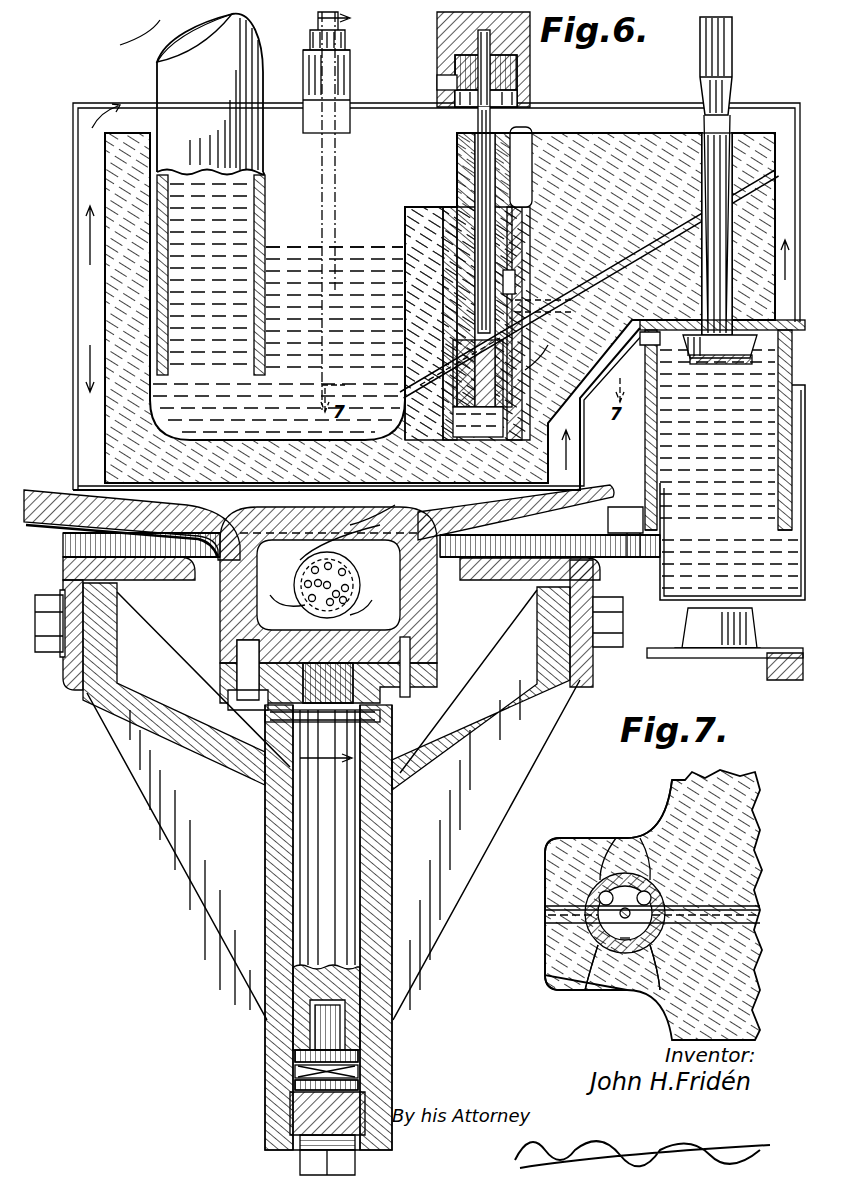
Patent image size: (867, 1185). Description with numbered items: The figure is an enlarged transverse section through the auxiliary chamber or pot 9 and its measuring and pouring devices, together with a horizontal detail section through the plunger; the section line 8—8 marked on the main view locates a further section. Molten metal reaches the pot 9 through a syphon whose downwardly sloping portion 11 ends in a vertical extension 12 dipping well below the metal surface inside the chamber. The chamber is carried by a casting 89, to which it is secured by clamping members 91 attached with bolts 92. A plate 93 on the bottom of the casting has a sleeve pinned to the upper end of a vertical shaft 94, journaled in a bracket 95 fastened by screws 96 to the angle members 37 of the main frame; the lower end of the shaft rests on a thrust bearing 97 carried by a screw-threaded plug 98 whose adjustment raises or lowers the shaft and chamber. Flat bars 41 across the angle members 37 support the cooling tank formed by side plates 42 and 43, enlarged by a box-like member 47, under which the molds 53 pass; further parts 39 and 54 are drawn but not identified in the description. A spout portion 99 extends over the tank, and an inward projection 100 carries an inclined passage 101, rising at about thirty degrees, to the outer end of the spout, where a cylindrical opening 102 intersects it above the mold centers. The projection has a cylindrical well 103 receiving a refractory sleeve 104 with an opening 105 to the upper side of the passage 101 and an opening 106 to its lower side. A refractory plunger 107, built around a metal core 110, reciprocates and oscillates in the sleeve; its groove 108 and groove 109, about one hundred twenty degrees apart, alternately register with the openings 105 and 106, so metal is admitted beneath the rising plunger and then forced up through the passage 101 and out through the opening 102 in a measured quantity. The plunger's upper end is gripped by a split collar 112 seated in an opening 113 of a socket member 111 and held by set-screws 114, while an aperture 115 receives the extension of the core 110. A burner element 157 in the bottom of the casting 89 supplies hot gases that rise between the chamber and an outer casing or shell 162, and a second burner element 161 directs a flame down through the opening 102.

In FIG. 6, the section line 8- 8 is at (318, 398).
In FIG. 6, the auxiliary chamber or pot 9 is at (108, 312).
In FIG. 7, the auxiliary chamber or pot 9 is at (740, 838).
In FIG. 6, the downwardly sloping portion 11 is at (157, 62).
In FIG. 6, the vertical extension 12 is at (265, 236).
In FIG. 6, the angle members 37 is at (72, 682).
In FIG. 6, the base plate 39 is at (770, 666).
In FIG. 6, the flat bars 41 is at (608, 557).
In FIG. 6, the side plate 42 is at (646, 452).
In FIG. 6, the side plate 43 is at (778, 434).
In FIG. 6, the box-like member 47 is at (663, 600).
In FIG. 6, the molds 53 is at (764, 626).
In FIG. 6, the strip 54 is at (650, 342).
In FIG. 6, the casting 89 is at (428, 592).
In FIG. 6, the clamping members 91 is at (304, 74).
In FIG. 6, the bolts 92 is at (318, 190).
In FIG. 6, the plate 93 is at (381, 700).
In FIG. 6, the vertical shaft 94 is at (293, 984).
In FIG. 6, the bracket 95 is at (393, 970).
In FIG. 6, the screws 96 is at (44, 646).
In FIG. 6, the thrust bearing 97 is at (360, 1066).
In FIG. 6, the plug 98 is at (290, 1116).
In FIG. 6, the spout portion 99 is at (620, 140).
In FIG. 6, the inward projection 100 is at (416, 210).
In FIG. 7, the inward projection 100 is at (560, 838).
In FIG. 6, the inclined passage 101 is at (545, 274).
In FIG. 7, the inclined passage 101 is at (546, 913).
In FIG. 6, the cylindrical opening 102 is at (706, 186).
In FIG. 6, the cylindrical well 103 is at (442, 230).
In FIG. 6, the sleeve 104 is at (448, 207).
In FIG. 7, the sleeve 104 is at (624, 838).
In FIG. 6, the opening 105 is at (518, 280).
In FIG. 7, the opening 105 is at (651, 935).
In FIG. 6, the opening 106 is at (455, 338).
In FIG. 7, the opening 106 is at (600, 935).
In FIG. 6, the plunger 107 is at (459, 146).
In FIG. 7, the plunger 107 is at (625, 938).
In FIG. 6, the groove 108 is at (528, 364).
In FIG. 7, the groove 108 is at (655, 835).
In FIG. 7, the groove 109 is at (602, 896).
In FIG. 6, the metal core 110 is at (490, 156).
In FIG. 6, the socket member 111 is at (437, 34).
In FIG. 6, the split collar 112 is at (520, 100).
In FIG. 6, the opening 113 is at (517, 64).
In FIG. 6, the set-screws 114 is at (438, 84).
In FIG. 6, the aperture 115 is at (478, 44).
In FIG. 6, the burner element 157 is at (352, 568).
In FIG. 6, the burner element 161 is at (733, 44).
In FIG. 6, the outer casing or shell 162 is at (74, 257).